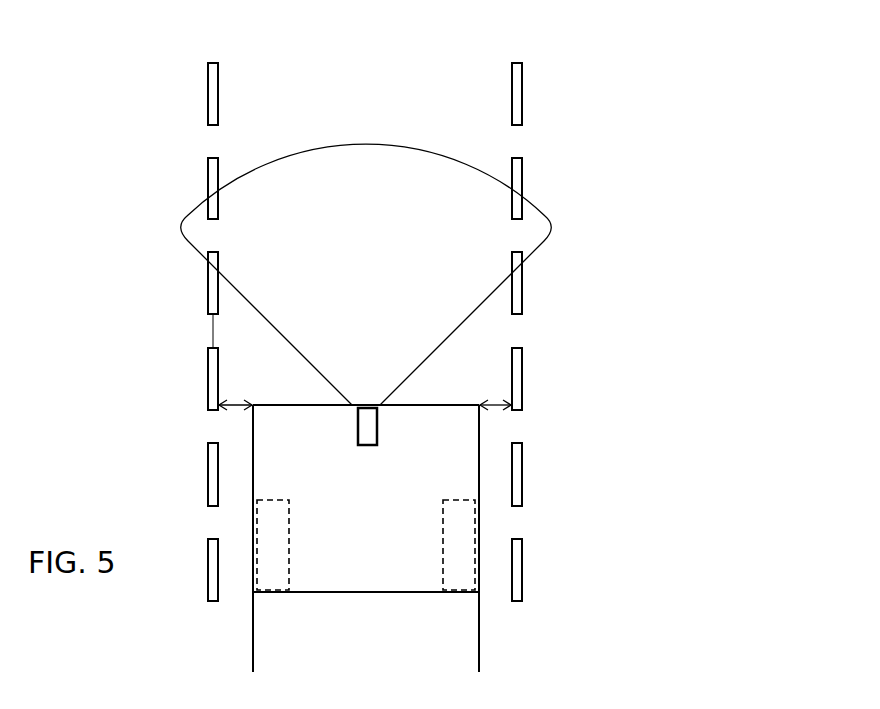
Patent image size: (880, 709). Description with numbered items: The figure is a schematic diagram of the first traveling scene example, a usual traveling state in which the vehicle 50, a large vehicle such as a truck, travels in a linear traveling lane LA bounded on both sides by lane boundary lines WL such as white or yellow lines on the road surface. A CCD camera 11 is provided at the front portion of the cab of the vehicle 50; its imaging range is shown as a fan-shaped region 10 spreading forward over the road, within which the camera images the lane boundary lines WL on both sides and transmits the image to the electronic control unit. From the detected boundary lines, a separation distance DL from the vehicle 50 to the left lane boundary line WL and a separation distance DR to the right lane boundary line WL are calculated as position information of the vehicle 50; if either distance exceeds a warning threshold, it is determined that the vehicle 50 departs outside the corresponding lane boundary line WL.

The detection range of sensor 10 is at (362, 399).
The CCD camera 11 is at (378, 431).
The vehicle 50 is at (383, 640).
The lane boundary line WL is at (213, 62).
The traveling lane LA is at (370, 28).
The separation distance to left lane boundary line DL is at (229, 403).
The separation distance to right lane boundary line DR is at (490, 403).